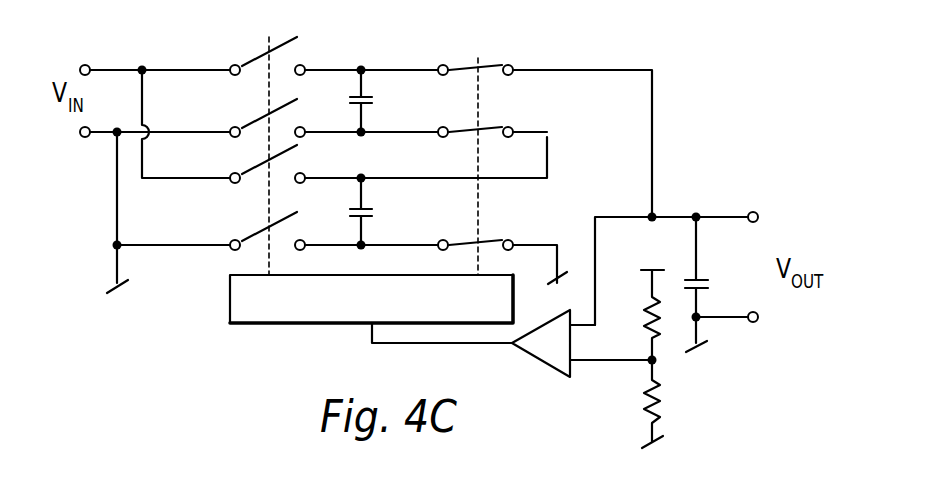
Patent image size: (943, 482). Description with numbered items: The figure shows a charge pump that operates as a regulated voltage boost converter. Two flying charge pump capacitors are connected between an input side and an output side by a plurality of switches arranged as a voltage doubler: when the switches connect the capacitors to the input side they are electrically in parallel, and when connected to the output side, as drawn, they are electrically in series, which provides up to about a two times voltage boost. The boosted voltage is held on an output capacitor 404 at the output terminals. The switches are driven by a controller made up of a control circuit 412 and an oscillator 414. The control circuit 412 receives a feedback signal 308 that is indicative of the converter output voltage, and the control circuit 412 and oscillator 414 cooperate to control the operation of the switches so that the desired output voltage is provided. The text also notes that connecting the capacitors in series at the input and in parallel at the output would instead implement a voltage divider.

The feedback signal 308 is at (613, 217).
The output capacitor 404 is at (710, 286).
The control circuit 412 is at (547, 368).
The oscillator 414 is at (230, 297).